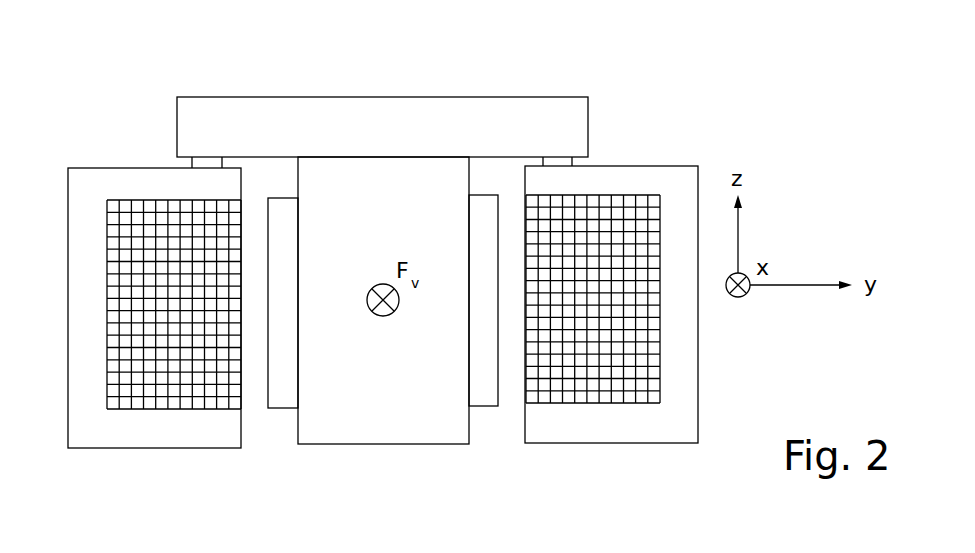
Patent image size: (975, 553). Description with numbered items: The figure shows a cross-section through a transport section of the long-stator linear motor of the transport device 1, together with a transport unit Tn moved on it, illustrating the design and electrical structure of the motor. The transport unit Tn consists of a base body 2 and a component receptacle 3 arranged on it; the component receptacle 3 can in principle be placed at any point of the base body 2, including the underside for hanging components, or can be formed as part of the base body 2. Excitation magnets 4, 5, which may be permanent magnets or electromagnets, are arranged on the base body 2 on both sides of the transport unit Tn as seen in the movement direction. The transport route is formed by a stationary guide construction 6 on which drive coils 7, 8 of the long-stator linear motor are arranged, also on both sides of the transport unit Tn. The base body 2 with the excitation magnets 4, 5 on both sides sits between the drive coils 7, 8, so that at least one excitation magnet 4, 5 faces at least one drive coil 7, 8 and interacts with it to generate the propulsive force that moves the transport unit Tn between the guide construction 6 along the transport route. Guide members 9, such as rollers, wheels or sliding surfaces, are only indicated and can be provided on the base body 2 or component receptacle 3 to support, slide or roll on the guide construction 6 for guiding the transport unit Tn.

The transport device 1 is at (672, 97).
The base body 2 is at (387, 393).
The component receptacle 3 is at (438, 125).
The excitation magnet 4 is at (293, 375).
The excitation magnet 5 is at (485, 382).
The guide construction 6 is at (90, 403).
The drive coil 7 is at (153, 373).
The drive coil 8 is at (577, 365).
The guide member 9 is at (205, 148).